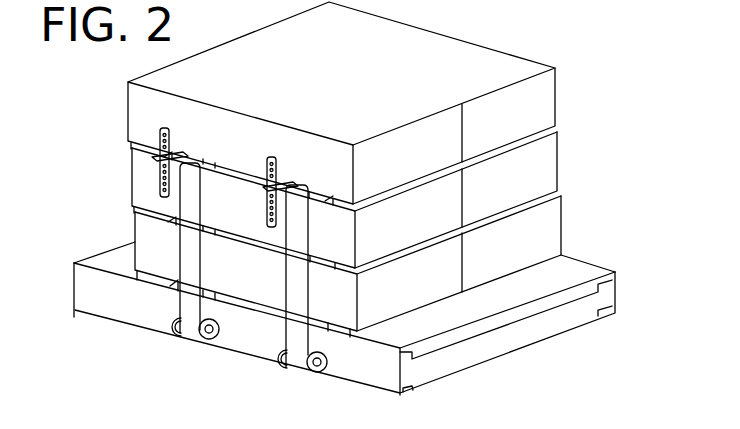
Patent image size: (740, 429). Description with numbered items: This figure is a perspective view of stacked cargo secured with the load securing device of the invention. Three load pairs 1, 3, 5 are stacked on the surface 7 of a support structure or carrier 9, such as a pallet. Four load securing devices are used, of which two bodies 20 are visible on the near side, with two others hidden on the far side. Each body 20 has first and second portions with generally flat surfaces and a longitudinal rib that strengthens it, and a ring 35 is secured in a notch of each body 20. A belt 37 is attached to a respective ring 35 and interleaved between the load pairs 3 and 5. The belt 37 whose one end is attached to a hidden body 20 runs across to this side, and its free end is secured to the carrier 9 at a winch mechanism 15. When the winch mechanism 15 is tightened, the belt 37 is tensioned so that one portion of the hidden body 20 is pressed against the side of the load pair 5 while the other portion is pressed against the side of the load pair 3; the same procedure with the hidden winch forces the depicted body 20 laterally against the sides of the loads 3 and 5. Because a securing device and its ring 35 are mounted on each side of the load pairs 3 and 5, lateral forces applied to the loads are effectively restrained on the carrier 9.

The load pair 1 is at (578, 225).
The load pair 3 is at (577, 163).
The load pair 5 is at (578, 100).
The surface 7 is at (502, 322).
The carrier 9 is at (364, 318).
The winch mechanism 15 is at (210, 336).
The body 20 is at (163, 128).
The ring 35 is at (175, 156).
The belt 37 is at (186, 305).